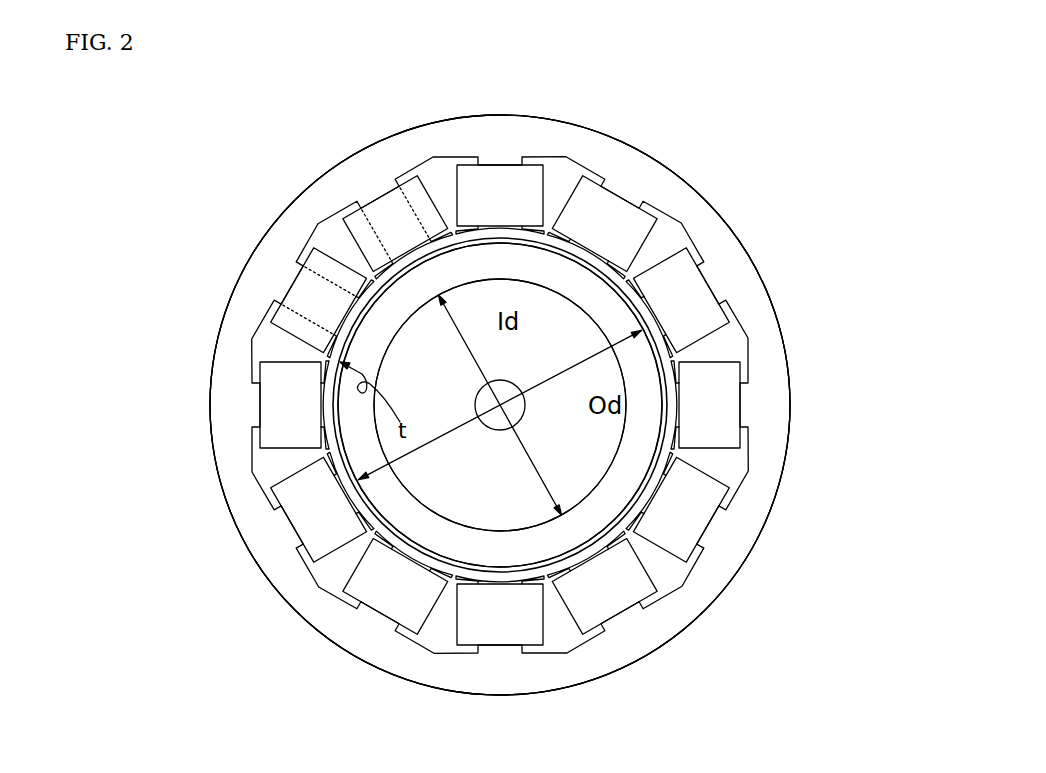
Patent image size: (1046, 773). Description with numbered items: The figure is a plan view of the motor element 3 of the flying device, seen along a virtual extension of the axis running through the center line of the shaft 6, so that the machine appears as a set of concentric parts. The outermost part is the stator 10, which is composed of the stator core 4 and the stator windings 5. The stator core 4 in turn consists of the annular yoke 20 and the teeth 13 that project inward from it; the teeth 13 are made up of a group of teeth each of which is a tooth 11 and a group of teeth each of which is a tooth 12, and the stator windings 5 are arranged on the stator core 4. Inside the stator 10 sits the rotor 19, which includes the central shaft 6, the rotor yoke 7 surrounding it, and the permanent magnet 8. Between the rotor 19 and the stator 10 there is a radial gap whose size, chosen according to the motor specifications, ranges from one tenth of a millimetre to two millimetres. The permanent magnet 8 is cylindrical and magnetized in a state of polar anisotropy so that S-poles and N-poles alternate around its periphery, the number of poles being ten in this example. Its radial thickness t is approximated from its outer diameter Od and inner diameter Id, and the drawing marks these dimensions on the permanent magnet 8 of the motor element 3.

The motor element 3 is at (747, 248).
The stator core 4 is at (774, 400).
The stator windings 5 is at (274, 408).
The shaft 6 is at (500, 418).
The rotor yoke 7 is at (593, 453).
The permanent magnet 8 is at (577, 532).
The stator 10 is at (236, 325).
The tooth 11 is at (387, 222).
The tooth 12 is at (313, 290).
The teeth 13 is at (295, 249).
The rotor 19 is at (395, 503).
The annular yoke 20 is at (638, 174).